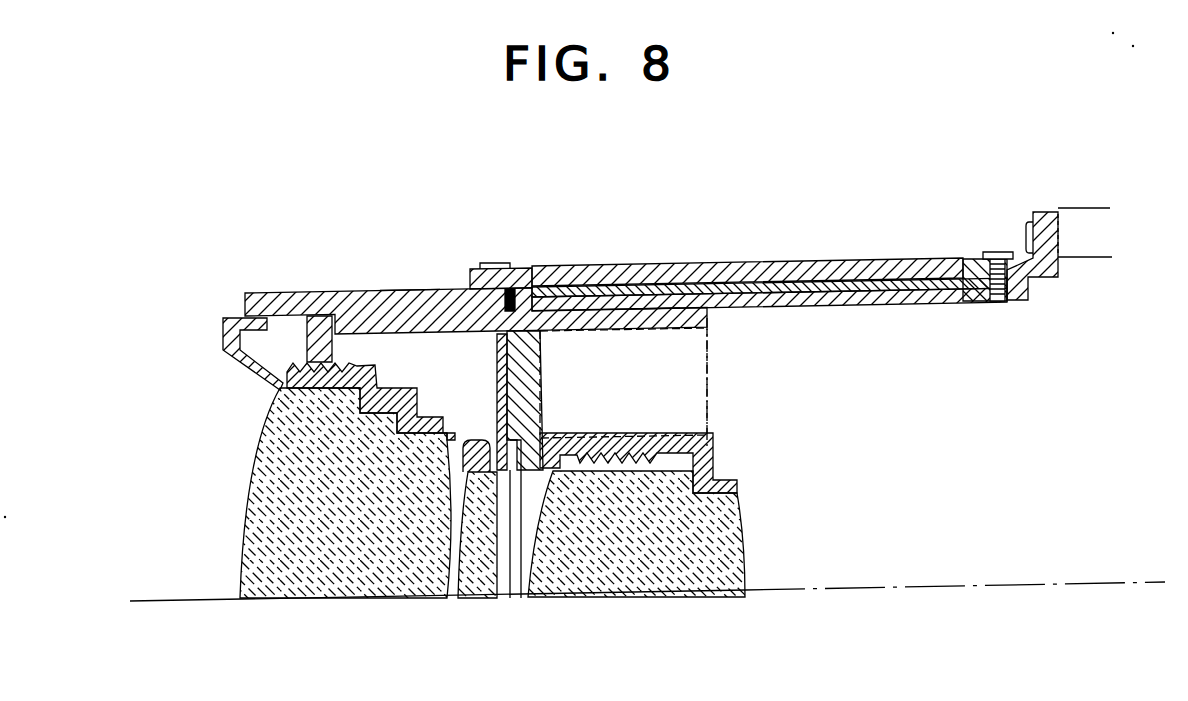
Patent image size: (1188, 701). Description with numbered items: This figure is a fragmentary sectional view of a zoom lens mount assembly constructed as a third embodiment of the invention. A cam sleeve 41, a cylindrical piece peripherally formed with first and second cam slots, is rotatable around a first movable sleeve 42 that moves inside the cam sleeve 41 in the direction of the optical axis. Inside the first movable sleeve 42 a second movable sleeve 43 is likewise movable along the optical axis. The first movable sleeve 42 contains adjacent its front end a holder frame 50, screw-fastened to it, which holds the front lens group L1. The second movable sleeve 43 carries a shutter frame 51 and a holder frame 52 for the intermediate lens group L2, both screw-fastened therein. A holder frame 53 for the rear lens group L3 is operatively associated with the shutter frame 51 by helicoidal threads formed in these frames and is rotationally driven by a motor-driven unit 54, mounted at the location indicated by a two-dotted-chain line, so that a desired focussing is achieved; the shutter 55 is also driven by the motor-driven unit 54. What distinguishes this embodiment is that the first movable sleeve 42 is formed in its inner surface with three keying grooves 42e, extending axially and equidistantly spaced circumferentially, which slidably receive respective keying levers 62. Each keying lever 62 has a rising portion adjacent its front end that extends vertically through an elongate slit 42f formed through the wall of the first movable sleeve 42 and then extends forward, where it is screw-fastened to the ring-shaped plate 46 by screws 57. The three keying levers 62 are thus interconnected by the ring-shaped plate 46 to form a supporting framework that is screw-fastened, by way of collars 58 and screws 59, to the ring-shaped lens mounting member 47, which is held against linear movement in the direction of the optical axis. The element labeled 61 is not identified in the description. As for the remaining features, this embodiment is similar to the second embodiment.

The cam sleeve 41 is at (822, 262).
The first movable sleeve 42 is at (340, 292).
The keying grooves 42e is at (410, 291).
The elongate slit 42f is at (650, 296).
The second movable sleeve 43 is at (668, 323).
The ring-shaped plate 46 is at (538, 266).
The ring-shaped lens mounting member 47 is at (1040, 212).
The holder frame 50 is at (412, 390).
The shutter frame 51 is at (540, 372).
The holder frame 52 is at (497, 393).
The holder frame 53 is at (637, 440).
The motor-driven unit 54 is at (715, 386).
The shutter 55 is at (520, 540).
The screws 57 is at (503, 262).
The collars 58 is at (1033, 280).
The screws 59 is at (995, 252).
The mounting member 61 is at (1063, 226).
The keying levers 62 is at (880, 301).
The front lens group L1 is at (262, 533).
The intermediate lens group L2 is at (470, 582).
The rear lens group L3 is at (655, 570).